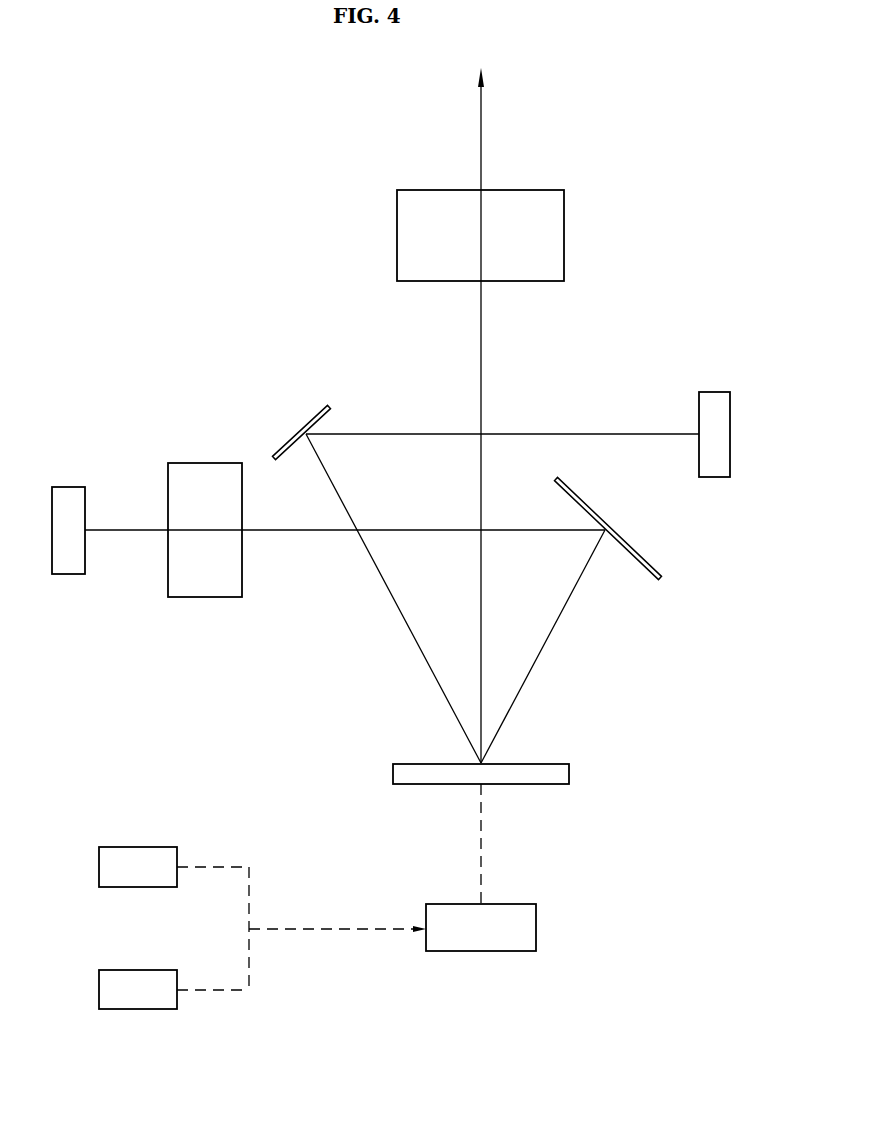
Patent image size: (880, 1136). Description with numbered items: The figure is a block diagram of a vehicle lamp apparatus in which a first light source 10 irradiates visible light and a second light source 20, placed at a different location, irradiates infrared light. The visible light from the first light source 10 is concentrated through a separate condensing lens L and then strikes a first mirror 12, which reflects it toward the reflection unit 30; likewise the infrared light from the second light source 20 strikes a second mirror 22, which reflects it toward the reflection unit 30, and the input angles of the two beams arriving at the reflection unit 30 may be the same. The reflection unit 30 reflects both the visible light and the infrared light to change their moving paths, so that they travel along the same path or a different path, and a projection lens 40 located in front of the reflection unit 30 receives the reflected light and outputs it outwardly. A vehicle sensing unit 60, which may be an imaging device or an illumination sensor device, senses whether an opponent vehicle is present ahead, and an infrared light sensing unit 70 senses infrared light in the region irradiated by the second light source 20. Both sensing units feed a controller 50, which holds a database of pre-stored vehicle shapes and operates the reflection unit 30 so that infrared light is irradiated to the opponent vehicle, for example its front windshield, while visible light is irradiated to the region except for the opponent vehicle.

The first light source 10 is at (67, 576).
The condensing lens L is at (203, 597).
The first mirror 12 is at (648, 563).
The second light source 20 is at (716, 395).
The second mirror 22 is at (317, 414).
The reflection unit 30 is at (562, 775).
The projection lens 40 is at (557, 234).
The controller 50 is at (481, 951).
The vehicle sensing unit 60 is at (127, 852).
The infrared light sensing unit 70 is at (127, 1005).